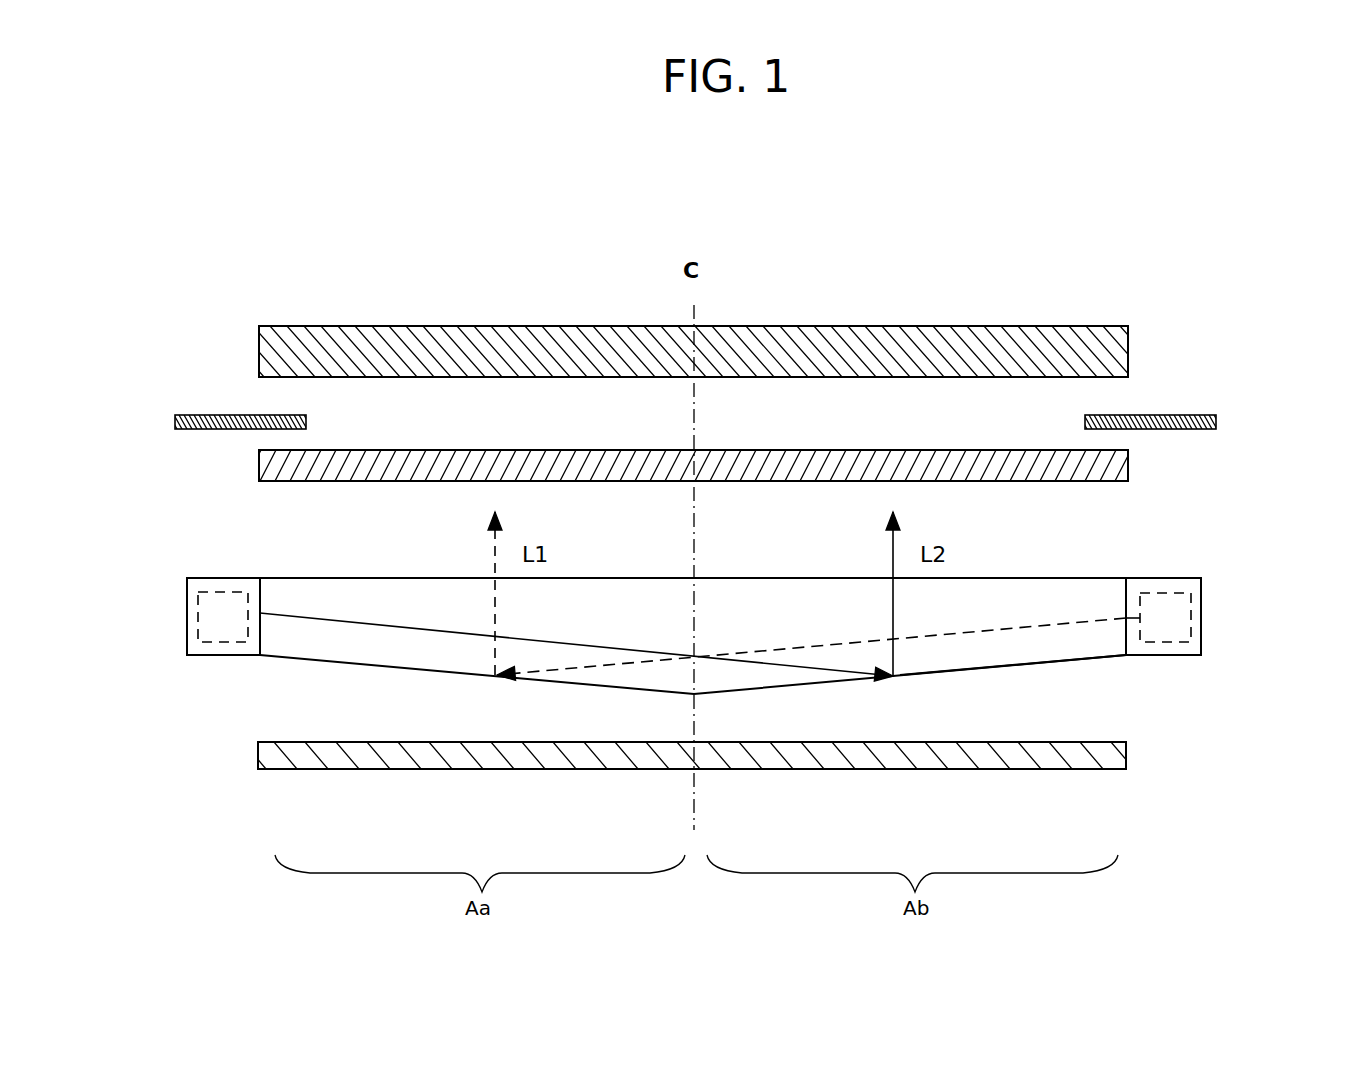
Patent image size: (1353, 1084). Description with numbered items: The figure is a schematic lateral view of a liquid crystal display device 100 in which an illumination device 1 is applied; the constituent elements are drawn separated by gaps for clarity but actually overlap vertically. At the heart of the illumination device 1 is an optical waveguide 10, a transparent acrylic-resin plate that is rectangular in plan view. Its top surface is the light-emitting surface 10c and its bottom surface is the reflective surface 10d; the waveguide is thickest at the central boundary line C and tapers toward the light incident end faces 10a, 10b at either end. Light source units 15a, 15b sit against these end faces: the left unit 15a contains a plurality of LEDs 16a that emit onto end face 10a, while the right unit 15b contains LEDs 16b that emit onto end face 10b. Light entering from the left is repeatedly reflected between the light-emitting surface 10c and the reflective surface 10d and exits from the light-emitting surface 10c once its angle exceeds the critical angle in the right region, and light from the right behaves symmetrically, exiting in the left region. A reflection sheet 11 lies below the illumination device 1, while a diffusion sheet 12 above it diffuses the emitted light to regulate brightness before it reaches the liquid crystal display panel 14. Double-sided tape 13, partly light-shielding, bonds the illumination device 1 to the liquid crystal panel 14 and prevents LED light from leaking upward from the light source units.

The liquid crystal display device 100 is at (708, 176).
The illumination device 1 is at (246, 542).
The optical waveguide 10 is at (455, 597).
The light incident end face 10a is at (262, 652).
The light incident end face 10b is at (1137, 583).
The light-emitting surface 10c is at (1040, 576).
The reflective surface 10d is at (1088, 660).
The reflection sheet 11 is at (1040, 770).
The diffusion sheet 12 is at (1129, 470).
The double-sided tape 13 is at (215, 415).
The liquid crystal display panel 14 is at (1129, 350).
The light source unit 15a is at (187, 612).
The light source unit 15b is at (1201, 625).
The LEDs 16a is at (223, 642).
The LEDs 16b is at (1190, 645).